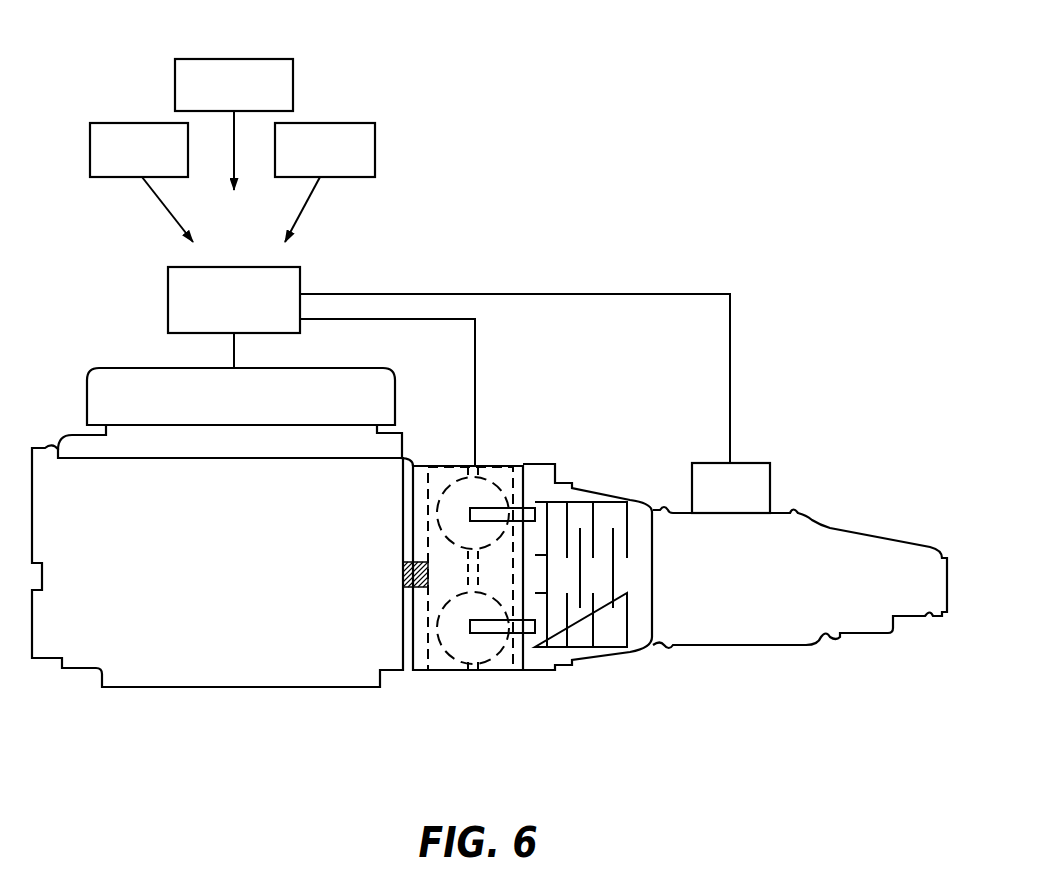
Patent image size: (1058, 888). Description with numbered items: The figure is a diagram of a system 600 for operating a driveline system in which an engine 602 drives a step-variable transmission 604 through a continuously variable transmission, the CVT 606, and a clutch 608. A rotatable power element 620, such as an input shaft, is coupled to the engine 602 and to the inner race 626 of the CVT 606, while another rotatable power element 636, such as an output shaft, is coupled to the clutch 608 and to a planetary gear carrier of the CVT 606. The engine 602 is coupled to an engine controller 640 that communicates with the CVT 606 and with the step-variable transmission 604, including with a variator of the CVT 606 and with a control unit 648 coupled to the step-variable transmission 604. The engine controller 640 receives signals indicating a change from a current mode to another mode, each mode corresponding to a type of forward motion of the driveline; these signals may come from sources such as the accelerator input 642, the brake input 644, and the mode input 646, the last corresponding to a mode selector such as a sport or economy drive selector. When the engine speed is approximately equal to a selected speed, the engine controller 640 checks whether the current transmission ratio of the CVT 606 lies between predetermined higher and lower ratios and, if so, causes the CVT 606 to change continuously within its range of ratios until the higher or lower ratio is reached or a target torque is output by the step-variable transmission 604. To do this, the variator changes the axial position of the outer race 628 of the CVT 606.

The hybrid powertrain system 600 is at (707, 163).
The engine 602 is at (222, 527).
The step-variable transmission 604 is at (800, 577).
The CVT 606 is at (502, 462).
The clutch 608 is at (597, 662).
The rotatable power element 620 is at (413, 587).
The inner race 626 is at (427, 553).
The outer race 628 is at (433, 670).
The rotatable power element 636 is at (498, 637).
The engine controller 640 is at (168, 292).
The accelerator input 642 is at (230, 58).
The brake input 644 is at (333, 122).
The mode input 646 is at (128, 122).
The control unit 648 is at (745, 462).